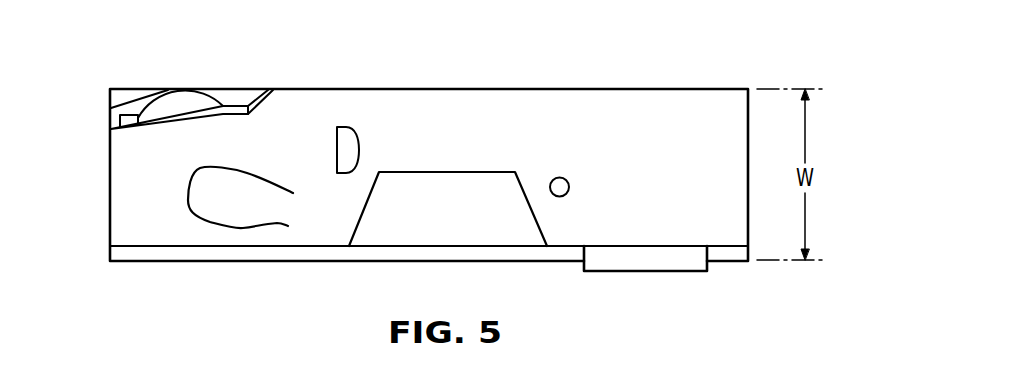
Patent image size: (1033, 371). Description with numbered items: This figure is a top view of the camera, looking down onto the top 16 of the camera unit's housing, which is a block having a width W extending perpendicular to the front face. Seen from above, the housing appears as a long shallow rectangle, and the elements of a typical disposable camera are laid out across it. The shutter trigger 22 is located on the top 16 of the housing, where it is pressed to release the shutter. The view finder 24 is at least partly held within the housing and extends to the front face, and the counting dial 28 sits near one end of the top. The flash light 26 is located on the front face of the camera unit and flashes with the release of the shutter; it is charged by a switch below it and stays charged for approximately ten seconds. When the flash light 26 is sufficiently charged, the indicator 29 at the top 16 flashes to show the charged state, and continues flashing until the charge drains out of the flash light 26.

The top 16 is at (658, 167).
The shutter trigger 22 is at (225, 192).
The view finder 24 is at (430, 190).
The flash light 26 is at (638, 272).
The counting dial 28 is at (176, 105).
The indicator 29 is at (555, 177).